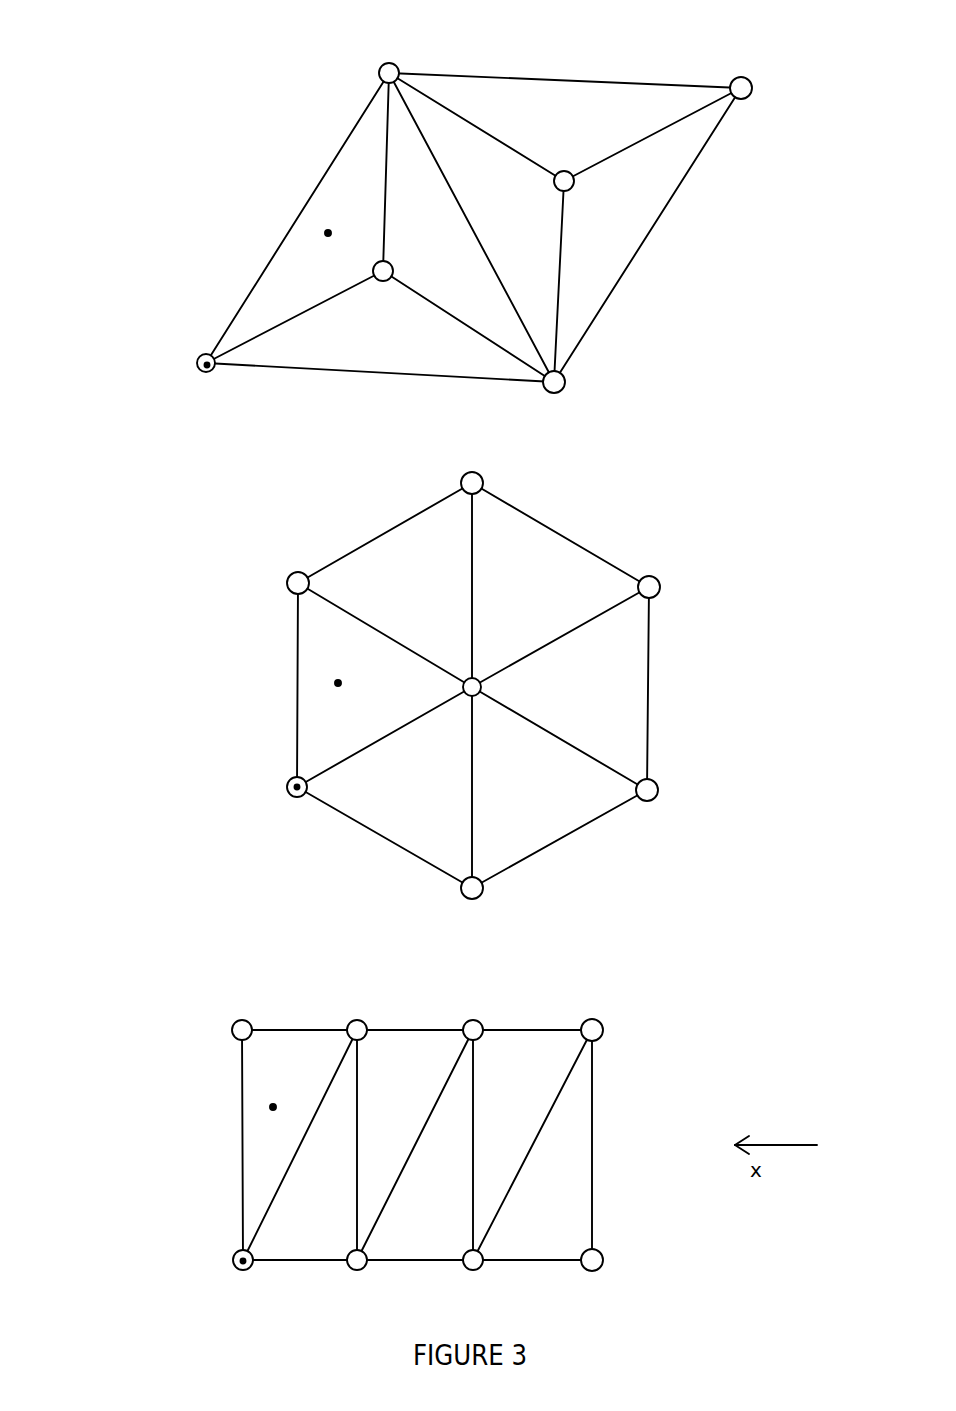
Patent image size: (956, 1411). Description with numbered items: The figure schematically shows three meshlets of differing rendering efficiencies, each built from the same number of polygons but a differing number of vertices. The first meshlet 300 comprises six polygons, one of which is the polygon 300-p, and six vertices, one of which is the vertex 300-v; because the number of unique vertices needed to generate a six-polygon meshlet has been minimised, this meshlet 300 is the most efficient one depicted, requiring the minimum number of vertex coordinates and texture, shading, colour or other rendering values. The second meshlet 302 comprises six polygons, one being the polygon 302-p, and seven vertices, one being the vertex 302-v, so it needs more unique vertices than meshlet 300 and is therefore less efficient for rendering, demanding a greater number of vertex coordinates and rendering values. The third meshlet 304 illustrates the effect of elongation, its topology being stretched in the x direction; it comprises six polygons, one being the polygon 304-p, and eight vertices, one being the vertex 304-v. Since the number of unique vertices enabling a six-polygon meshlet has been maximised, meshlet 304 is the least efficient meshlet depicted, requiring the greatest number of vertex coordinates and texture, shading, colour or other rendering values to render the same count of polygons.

The meshlet 300 is at (401, 206).
The polygon 300-p is at (328, 233).
The vertex 300-v is at (203, 366).
The meshlet 302 is at (383, 685).
The polygon 302-p is at (338, 683).
The vertex 302-v is at (295, 787).
The meshlet 304 is at (347, 1113).
The polygon 304-p is at (273, 1107).
The vertex 304-v is at (243, 1262).